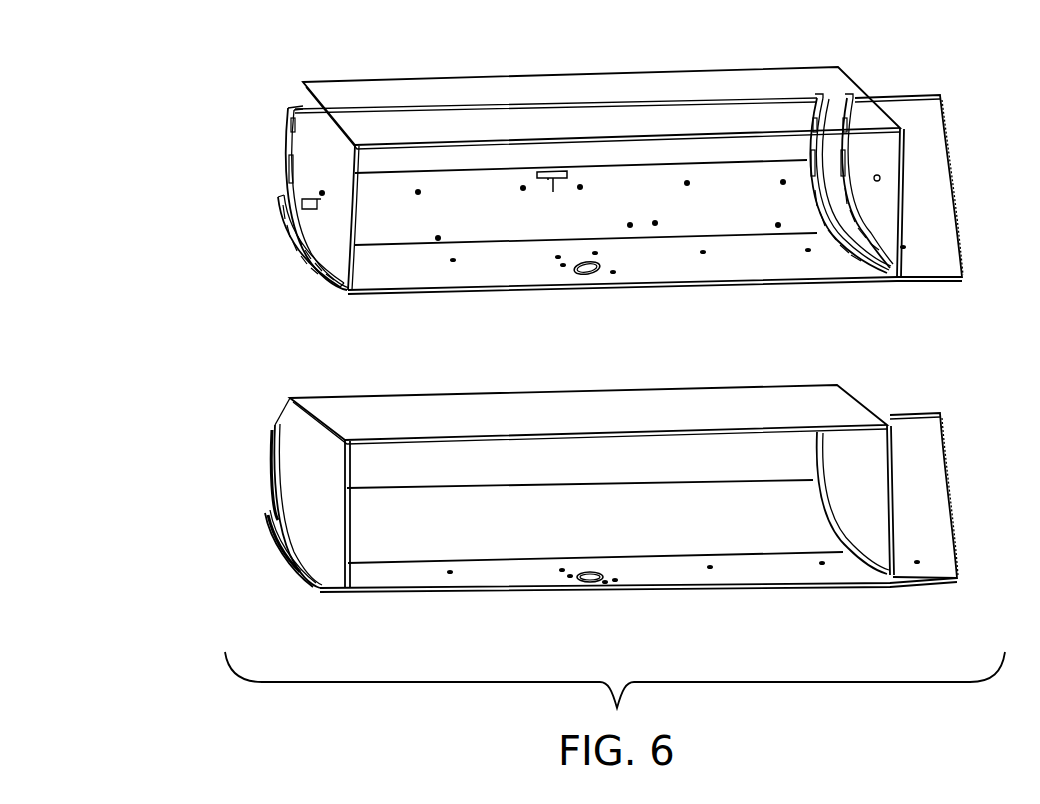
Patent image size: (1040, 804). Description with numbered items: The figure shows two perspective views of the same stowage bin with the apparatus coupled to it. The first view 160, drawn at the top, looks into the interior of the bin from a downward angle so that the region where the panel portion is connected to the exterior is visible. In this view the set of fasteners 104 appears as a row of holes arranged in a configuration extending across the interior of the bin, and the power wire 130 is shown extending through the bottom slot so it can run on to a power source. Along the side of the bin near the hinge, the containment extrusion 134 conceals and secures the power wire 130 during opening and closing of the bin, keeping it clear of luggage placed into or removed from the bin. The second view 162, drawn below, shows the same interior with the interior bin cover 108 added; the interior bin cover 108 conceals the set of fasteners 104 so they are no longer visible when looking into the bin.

The first view 160 is at (243, 130).
The second view 162 is at (235, 401).
The containment extrusion 134 is at (277, 205).
The power wire 130 is at (545, 192).
The set of fasteners 104 is at (777, 184).
The interior bin cover 108 is at (398, 548).